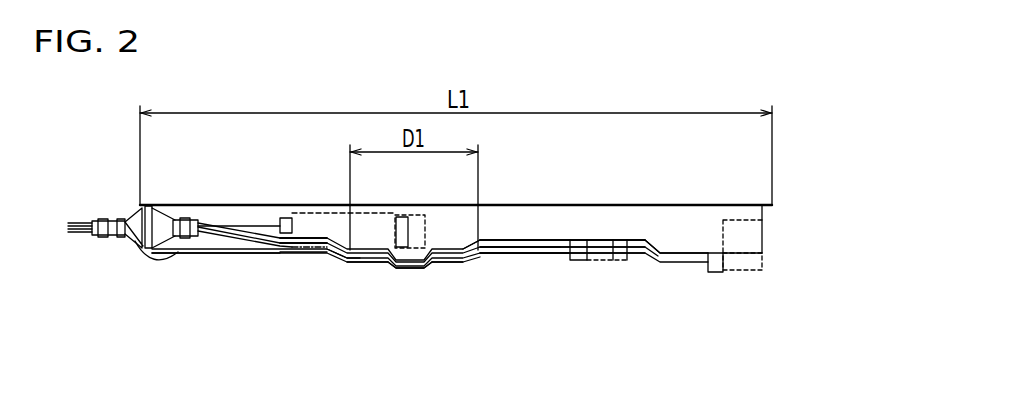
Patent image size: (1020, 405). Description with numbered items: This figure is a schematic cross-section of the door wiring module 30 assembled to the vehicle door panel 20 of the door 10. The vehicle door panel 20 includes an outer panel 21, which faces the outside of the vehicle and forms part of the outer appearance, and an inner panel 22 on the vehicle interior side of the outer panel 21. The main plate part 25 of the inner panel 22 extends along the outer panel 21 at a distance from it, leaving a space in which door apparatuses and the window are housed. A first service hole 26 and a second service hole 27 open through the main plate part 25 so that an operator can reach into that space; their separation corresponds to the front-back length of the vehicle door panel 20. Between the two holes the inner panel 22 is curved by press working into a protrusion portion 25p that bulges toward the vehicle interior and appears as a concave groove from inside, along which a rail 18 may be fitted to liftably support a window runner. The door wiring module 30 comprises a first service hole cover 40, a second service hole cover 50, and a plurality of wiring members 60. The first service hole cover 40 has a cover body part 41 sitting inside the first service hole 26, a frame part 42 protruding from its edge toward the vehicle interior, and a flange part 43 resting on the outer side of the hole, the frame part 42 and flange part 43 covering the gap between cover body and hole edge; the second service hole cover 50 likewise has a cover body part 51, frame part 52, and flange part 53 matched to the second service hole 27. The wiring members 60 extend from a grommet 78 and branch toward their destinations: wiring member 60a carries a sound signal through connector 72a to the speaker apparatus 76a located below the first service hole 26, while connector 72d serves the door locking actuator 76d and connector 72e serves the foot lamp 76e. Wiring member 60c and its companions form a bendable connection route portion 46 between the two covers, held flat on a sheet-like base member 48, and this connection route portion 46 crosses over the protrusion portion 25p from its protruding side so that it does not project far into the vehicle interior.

The door 10 is at (784, 219).
The rail 18 is at (415, 214).
The vehicle door panel 20 is at (110, 200).
The outer panel 21 is at (173, 202).
The inner panel 22 is at (126, 222).
The main plate part 25 is at (748, 272).
The protrusion portion 25p is at (404, 268).
The first service hole 26 is at (229, 254).
The second service hole 27 is at (657, 250).
The door wiring module 30 is at (488, 274).
The first service hole cover 40 is at (372, 313).
The cover body part 41 is at (297, 258).
The frame part 42 is at (324, 255).
The flange part 43 is at (355, 260).
The connection route portion 46 is at (373, 264).
The base member 48 is at (452, 264).
The second service hole cover 50 is at (583, 167).
The cover body part 51 is at (558, 244).
The frame part 52 is at (508, 245).
The flange part 53 is at (484, 242).
The wiring members 60 is at (77, 235).
The wiring member 60a is at (230, 226).
The wiring member 60c is at (513, 257).
The connector 72a is at (287, 217).
The connector 72d is at (712, 275).
The connector 72e is at (577, 261).
The speaker apparatus 76a is at (325, 213).
The door locking actuator 76d is at (764, 263).
The foot lamp 76e is at (618, 261).
The grommet 78 is at (133, 240).